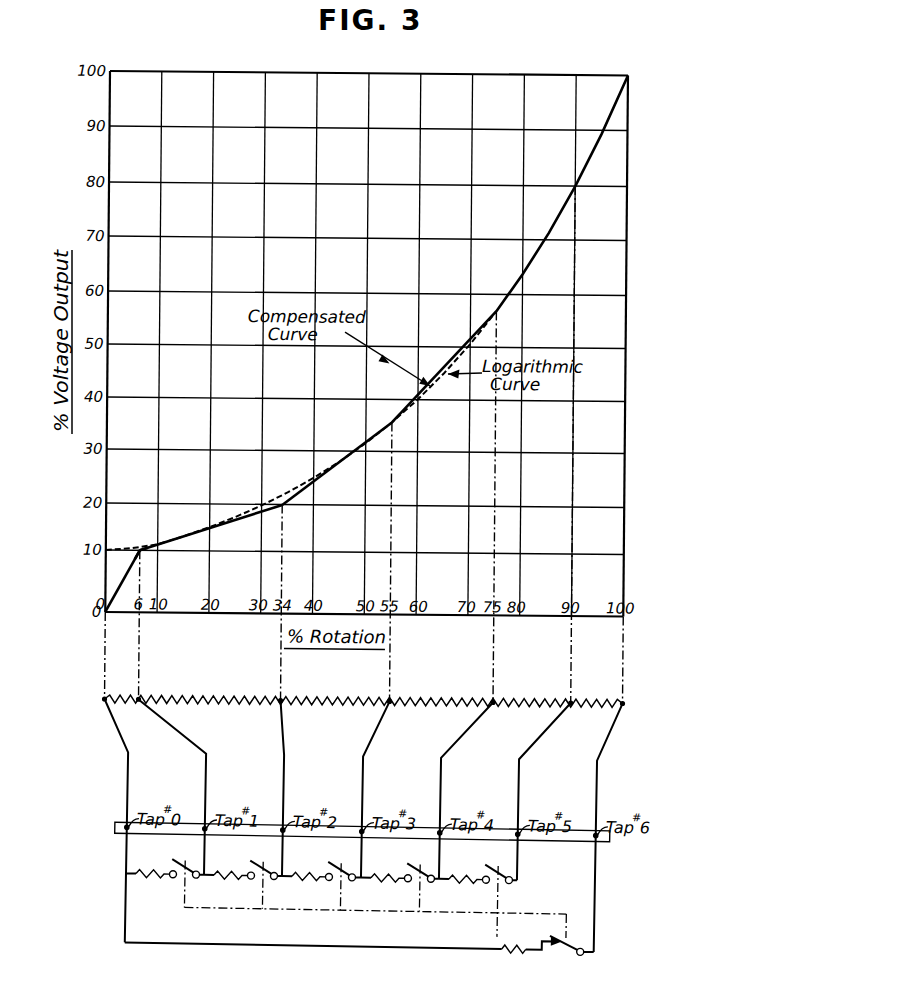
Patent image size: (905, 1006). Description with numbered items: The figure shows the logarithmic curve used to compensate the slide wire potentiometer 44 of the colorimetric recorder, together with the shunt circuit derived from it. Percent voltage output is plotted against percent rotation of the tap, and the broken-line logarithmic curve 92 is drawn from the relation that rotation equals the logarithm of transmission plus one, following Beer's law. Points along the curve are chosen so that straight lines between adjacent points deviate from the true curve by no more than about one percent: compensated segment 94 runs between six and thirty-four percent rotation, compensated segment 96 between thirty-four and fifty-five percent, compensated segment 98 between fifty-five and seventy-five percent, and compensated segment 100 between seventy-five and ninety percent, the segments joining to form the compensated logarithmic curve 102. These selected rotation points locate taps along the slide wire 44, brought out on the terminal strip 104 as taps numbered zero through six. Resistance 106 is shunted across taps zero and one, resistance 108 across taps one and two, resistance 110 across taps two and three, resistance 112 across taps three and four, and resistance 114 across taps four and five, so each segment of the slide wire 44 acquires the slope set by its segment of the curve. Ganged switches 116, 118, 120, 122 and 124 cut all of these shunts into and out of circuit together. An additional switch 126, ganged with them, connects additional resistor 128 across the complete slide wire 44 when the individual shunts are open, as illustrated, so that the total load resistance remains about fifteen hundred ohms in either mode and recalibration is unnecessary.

The slide wire potentiometer 44 is at (331, 697).
The logarithmic curve 92 is at (218, 521).
The compensated segment 94 is at (166, 546).
The compensated segment 96 is at (322, 475).
The compensated segment 98 is at (445, 377).
The compensated segment 100 is at (529, 269).
The compensated logarithmic curve 102 is at (128, 578).
The terminal strip 104 is at (128, 825).
The resistance 106 is at (163, 878).
The resistance 108 is at (240, 878).
The resistance 110 is at (313, 878).
The resistance 112 is at (399, 878).
The resistance 114 is at (474, 878).
The ganged switch 116 is at (190, 852).
The ganged switch 118 is at (268, 852).
The ganged switch 120 is at (346, 854).
The ganged switch 122 is at (423, 854).
The ganged switch 124 is at (505, 856).
The additional switch 126 is at (576, 946).
The additional resistor 128 is at (520, 945).